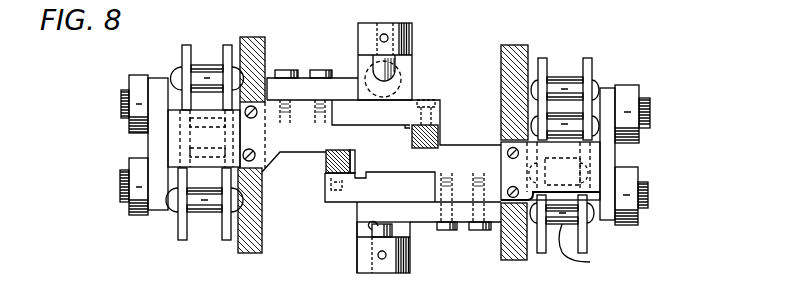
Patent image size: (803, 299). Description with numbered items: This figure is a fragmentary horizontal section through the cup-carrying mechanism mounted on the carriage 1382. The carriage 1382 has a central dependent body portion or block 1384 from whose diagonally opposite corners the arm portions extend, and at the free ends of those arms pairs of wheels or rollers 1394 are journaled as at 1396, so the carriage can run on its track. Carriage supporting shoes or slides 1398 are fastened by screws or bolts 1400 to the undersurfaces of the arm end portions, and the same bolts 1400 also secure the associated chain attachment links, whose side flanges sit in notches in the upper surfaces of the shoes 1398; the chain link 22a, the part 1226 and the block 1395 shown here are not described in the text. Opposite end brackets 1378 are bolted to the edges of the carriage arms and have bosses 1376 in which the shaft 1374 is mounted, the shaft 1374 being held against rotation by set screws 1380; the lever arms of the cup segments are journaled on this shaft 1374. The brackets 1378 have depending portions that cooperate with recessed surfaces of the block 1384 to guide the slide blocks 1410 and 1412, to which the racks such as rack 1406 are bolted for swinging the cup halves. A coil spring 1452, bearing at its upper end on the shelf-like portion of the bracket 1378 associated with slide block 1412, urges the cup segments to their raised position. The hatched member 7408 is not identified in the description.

The chain link 22a is at (203, 215).
The wire 1226 is at (599, 249).
The shaft 1374 is at (371, 230).
The bosses 1376 is at (412, 46).
The end brackets 1378 is at (356, 220).
The set screws 1380 is at (380, 38).
The carriage 1382 is at (303, 61).
The central body portion or block 1384 is at (378, 157).
The wheels or rollers 1394 is at (147, 134).
The block 1395 is at (514, 55).
The journal 1396 is at (121, 106).
The carriage supporting shoes or slides 1398 is at (247, 247).
The screws or bolts 1400 is at (258, 118).
The rack 1406 is at (326, 167).
The slide block 1410 is at (413, 187).
The slide block 1412 is at (371, 114).
The spring 1452 is at (401, 87).
The block 7408 is at (451, 124).